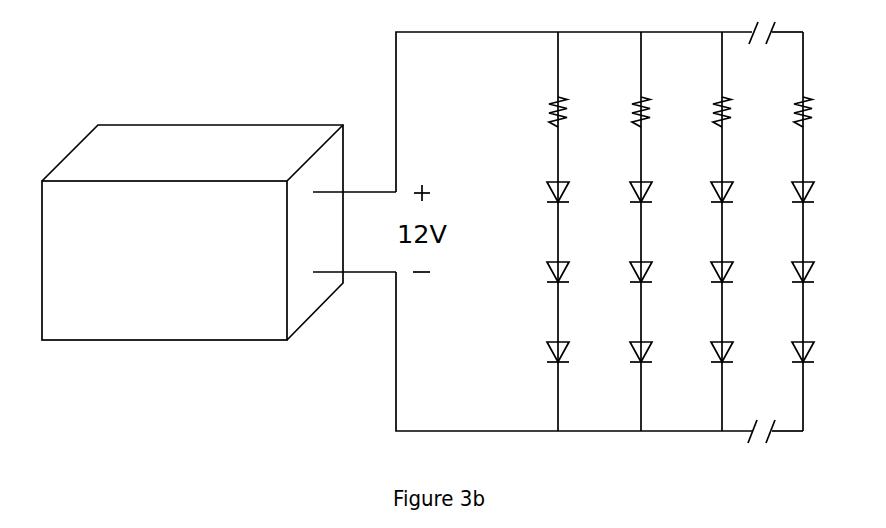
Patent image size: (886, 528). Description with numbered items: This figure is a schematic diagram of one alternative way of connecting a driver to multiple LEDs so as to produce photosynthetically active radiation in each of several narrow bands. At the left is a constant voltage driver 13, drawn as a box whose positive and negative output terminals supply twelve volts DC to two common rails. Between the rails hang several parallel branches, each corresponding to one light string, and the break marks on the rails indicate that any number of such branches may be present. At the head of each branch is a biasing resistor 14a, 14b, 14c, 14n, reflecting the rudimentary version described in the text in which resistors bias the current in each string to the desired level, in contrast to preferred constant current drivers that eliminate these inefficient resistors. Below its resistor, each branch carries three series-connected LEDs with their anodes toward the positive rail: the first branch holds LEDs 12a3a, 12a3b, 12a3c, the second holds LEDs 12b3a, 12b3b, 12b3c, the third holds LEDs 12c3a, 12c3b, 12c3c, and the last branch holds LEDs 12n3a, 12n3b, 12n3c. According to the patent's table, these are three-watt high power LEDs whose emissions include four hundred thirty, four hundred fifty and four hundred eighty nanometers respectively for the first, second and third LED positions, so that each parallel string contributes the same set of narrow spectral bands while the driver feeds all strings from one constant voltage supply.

The constant voltage driver 13 is at (260, 340).
The resistor 14a is at (569, 106).
The resistor 14b is at (652, 106).
The resistor 14c is at (733, 106).
The resistor 14n is at (814, 106).
The LED 12a3a is at (547, 188).
The LED 12a3b is at (547, 268).
The LED 12a3c is at (547, 348).
The LED 12b3a is at (630, 188).
The LED 12b3b is at (630, 268).
The LED 12b3c is at (630, 348).
The LED 12c3a is at (711, 188).
The LED 12c3b is at (711, 268).
The LED 12c3c is at (711, 348).
The LED 12n3a is at (792, 188).
The LED 12n3b is at (792, 268).
The LED 12n3c is at (792, 348).